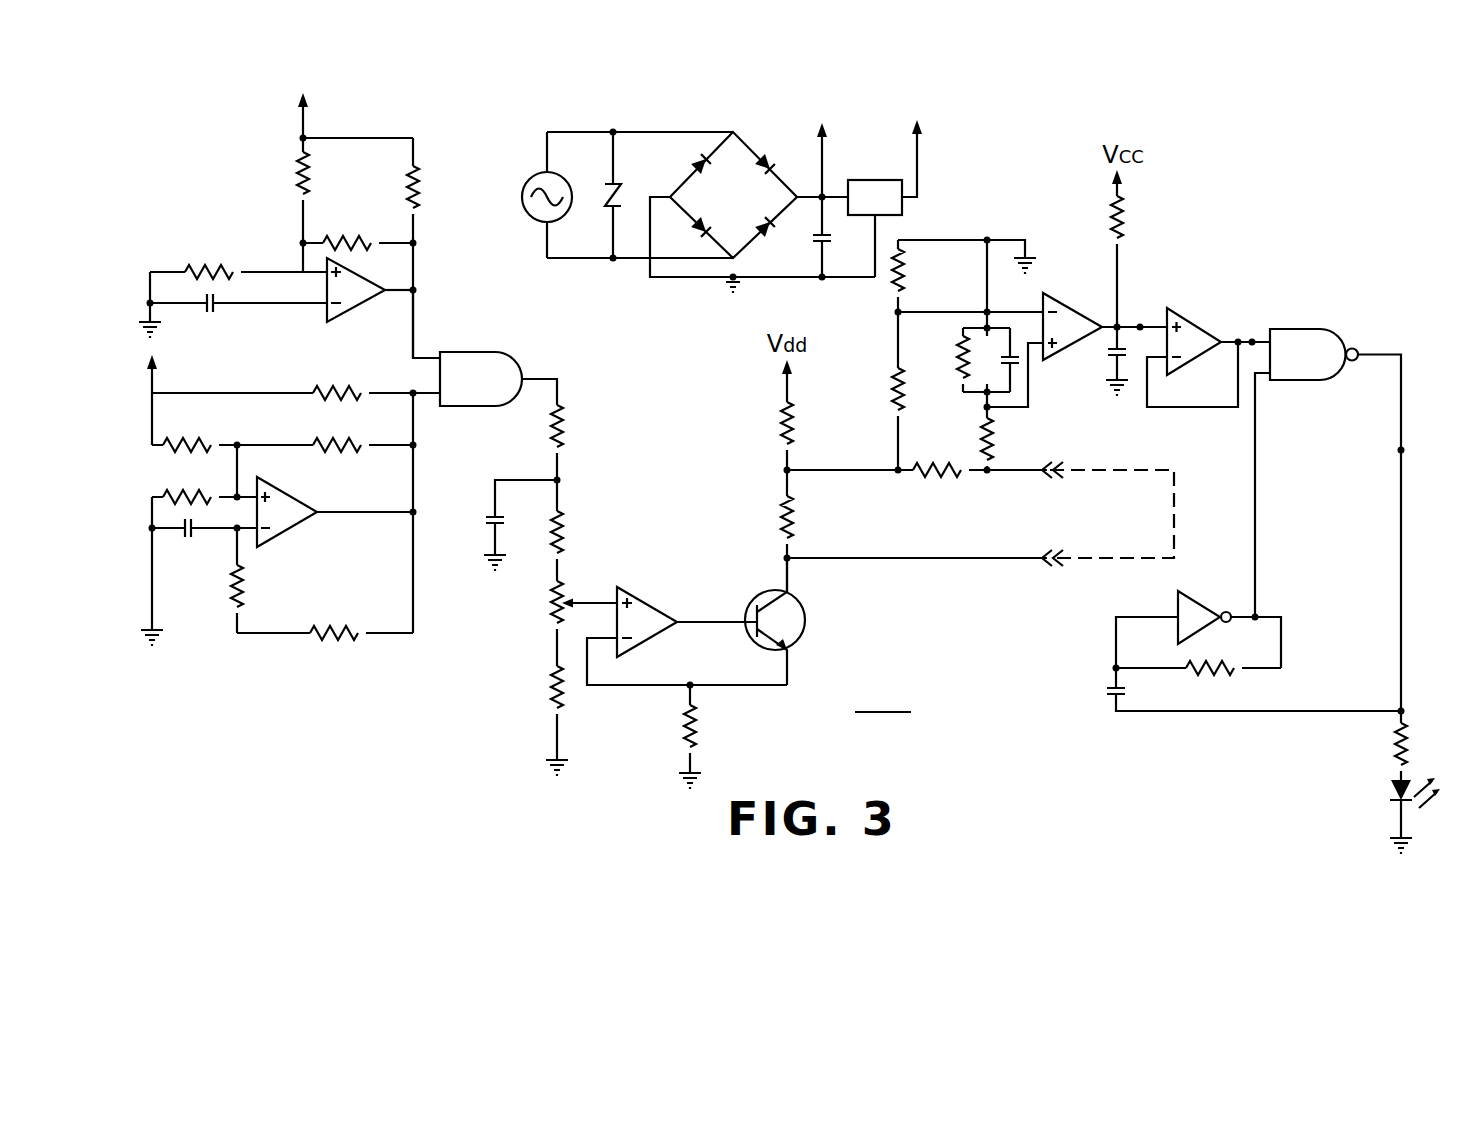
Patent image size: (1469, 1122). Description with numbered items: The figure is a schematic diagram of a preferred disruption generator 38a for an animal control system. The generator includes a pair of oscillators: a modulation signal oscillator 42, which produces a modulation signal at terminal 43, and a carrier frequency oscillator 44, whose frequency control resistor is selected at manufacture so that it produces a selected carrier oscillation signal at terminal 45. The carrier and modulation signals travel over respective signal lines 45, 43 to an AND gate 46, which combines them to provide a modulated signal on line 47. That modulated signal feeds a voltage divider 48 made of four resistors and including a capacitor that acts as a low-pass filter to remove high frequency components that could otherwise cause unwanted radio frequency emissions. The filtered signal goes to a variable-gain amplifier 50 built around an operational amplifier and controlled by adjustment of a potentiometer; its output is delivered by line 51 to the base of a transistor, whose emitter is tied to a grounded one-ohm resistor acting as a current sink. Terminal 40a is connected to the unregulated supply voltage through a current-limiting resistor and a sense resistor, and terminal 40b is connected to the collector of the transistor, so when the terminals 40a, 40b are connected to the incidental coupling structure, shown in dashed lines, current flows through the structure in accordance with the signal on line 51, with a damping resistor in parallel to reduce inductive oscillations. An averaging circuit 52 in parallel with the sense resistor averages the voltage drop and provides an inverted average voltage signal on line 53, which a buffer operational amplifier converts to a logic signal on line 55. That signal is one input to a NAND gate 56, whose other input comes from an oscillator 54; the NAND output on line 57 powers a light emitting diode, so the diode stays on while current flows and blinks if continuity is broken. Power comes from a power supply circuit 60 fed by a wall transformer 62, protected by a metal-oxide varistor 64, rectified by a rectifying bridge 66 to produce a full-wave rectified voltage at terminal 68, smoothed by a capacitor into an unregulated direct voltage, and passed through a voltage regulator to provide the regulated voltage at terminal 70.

The disruption generator 38a is at (883, 699).
The terminal 40a is at (1044, 462).
The terminal 40b is at (1044, 566).
The modulation signal oscillator 42 is at (424, 244).
The terminal 43 is at (413, 290).
The carrier frequency oscillator 44 is at (333, 643).
The terminal 45 is at (413, 512).
The AND gate 46 is at (455, 352).
The line 47 is at (557, 392).
The voltage divider 48 is at (567, 491).
The variable-gain amplifier 50 is at (659, 594).
The line 51 is at (705, 620).
The averaging circuit 52 is at (1033, 260).
The line 53 is at (1140, 327).
The oscillator 54 is at (1210, 591).
The line 55 is at (1252, 340).
The NAND gate 56 is at (1300, 329).
The line 57 is at (1401, 450).
The power supply circuit 60 is at (677, 132).
The wall transformer 62 is at (530, 184).
The metal-oxide varistor 64 is at (619, 183).
The rectifying bridge 66 is at (757, 148).
The terminal 68 is at (818, 193).
The terminal 70 is at (917, 152).